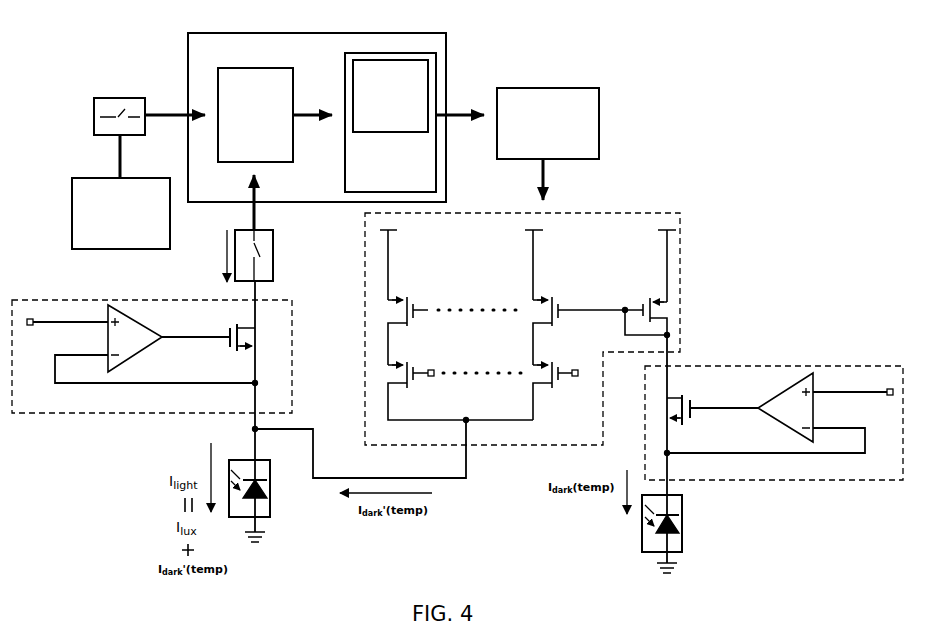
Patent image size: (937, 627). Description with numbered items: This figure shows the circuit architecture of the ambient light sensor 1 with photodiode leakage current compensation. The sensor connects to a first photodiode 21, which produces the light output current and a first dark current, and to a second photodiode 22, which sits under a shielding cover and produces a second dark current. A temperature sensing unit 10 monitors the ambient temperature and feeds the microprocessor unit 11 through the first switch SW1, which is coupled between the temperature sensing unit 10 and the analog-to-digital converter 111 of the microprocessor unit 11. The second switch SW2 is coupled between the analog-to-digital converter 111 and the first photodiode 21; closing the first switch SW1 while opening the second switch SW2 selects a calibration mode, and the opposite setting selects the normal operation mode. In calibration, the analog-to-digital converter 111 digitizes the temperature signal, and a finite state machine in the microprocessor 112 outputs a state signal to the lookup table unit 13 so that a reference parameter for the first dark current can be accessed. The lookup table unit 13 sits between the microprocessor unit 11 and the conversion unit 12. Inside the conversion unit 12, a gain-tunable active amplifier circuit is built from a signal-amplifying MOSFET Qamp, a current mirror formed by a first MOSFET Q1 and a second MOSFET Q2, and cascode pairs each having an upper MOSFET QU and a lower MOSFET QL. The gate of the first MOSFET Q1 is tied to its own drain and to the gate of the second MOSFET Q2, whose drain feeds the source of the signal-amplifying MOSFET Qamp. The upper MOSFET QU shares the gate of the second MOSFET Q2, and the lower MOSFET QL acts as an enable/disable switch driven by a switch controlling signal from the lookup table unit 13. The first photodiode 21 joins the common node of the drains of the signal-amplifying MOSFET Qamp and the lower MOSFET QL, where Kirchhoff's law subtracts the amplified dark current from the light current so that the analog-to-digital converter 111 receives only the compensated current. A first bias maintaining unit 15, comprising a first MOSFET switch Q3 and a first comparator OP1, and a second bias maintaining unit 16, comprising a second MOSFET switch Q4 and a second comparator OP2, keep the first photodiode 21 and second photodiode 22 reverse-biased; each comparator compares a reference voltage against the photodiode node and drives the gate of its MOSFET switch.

The ambient light sensor 1 is at (747, 98).
The temperature sensing unit 10 is at (73, 255).
The microprocessor unit 11 is at (454, 56).
The analog-to-digital converter 111 is at (218, 88).
The microprocessor 112 is at (436, 152).
The conversion unit 12 is at (689, 218).
The lookup table unit 13 is at (608, 132).
The first bias maintaining unit 15 is at (47, 420).
The second bias maintaining unit 16 is at (831, 487).
The first photodiode 21 is at (272, 509).
The second photodiode 22 is at (684, 517).
The first switch SW1 is at (94, 125).
The second switch SW2 is at (273, 238).
The first comparator OP1 is at (130, 326).
The second comparator OP2 is at (788, 398).
The first MOSFET Q1 is at (658, 282).
The second MOSFET Q2 is at (584, 297).
The first MOSFET switch Q3 is at (254, 337).
The second MOSFET switch Q4 is at (672, 410).
The upper MOSFET QU is at (404, 297).
The lower MOSFET QL is at (460, 381).
The signal-amplifying MOSFET Qamp is at (559, 391).